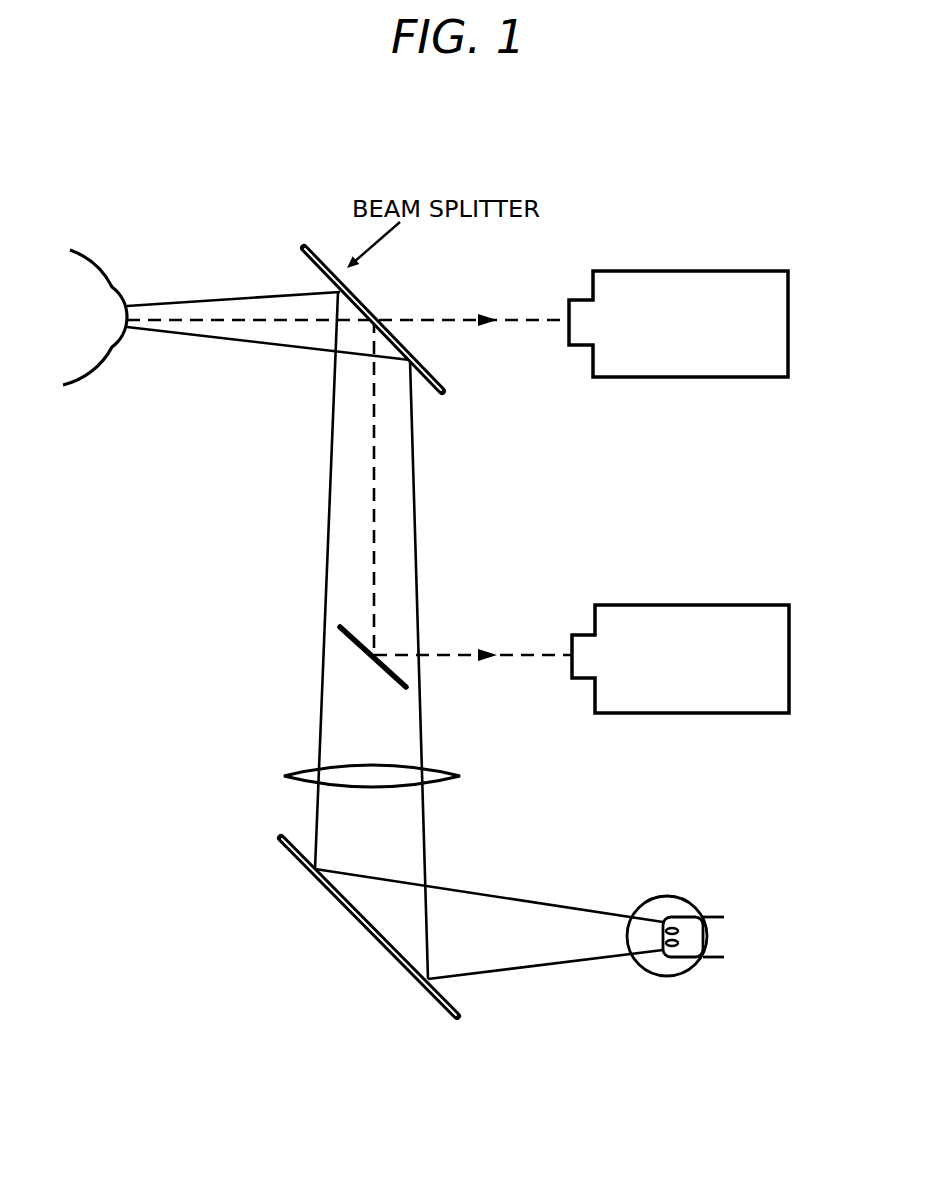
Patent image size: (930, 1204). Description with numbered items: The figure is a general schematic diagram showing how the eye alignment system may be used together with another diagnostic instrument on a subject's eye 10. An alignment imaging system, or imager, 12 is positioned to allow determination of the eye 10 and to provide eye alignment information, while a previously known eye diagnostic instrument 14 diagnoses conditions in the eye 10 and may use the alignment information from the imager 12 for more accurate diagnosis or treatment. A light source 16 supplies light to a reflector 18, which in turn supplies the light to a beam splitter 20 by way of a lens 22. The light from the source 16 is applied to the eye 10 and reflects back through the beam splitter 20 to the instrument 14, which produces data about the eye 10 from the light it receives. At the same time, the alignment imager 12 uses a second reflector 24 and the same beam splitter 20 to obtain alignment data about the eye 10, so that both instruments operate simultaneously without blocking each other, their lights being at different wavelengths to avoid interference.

The eye 10 is at (92, 260).
The alignment imaging system 12 is at (710, 605).
The eye diagnostic instrument 14 is at (693, 271).
The light source 16 is at (675, 975).
The reflector 18 is at (348, 913).
The beam splitter 20 is at (362, 302).
The lens 22 is at (337, 757).
The reflector 24 is at (350, 643).